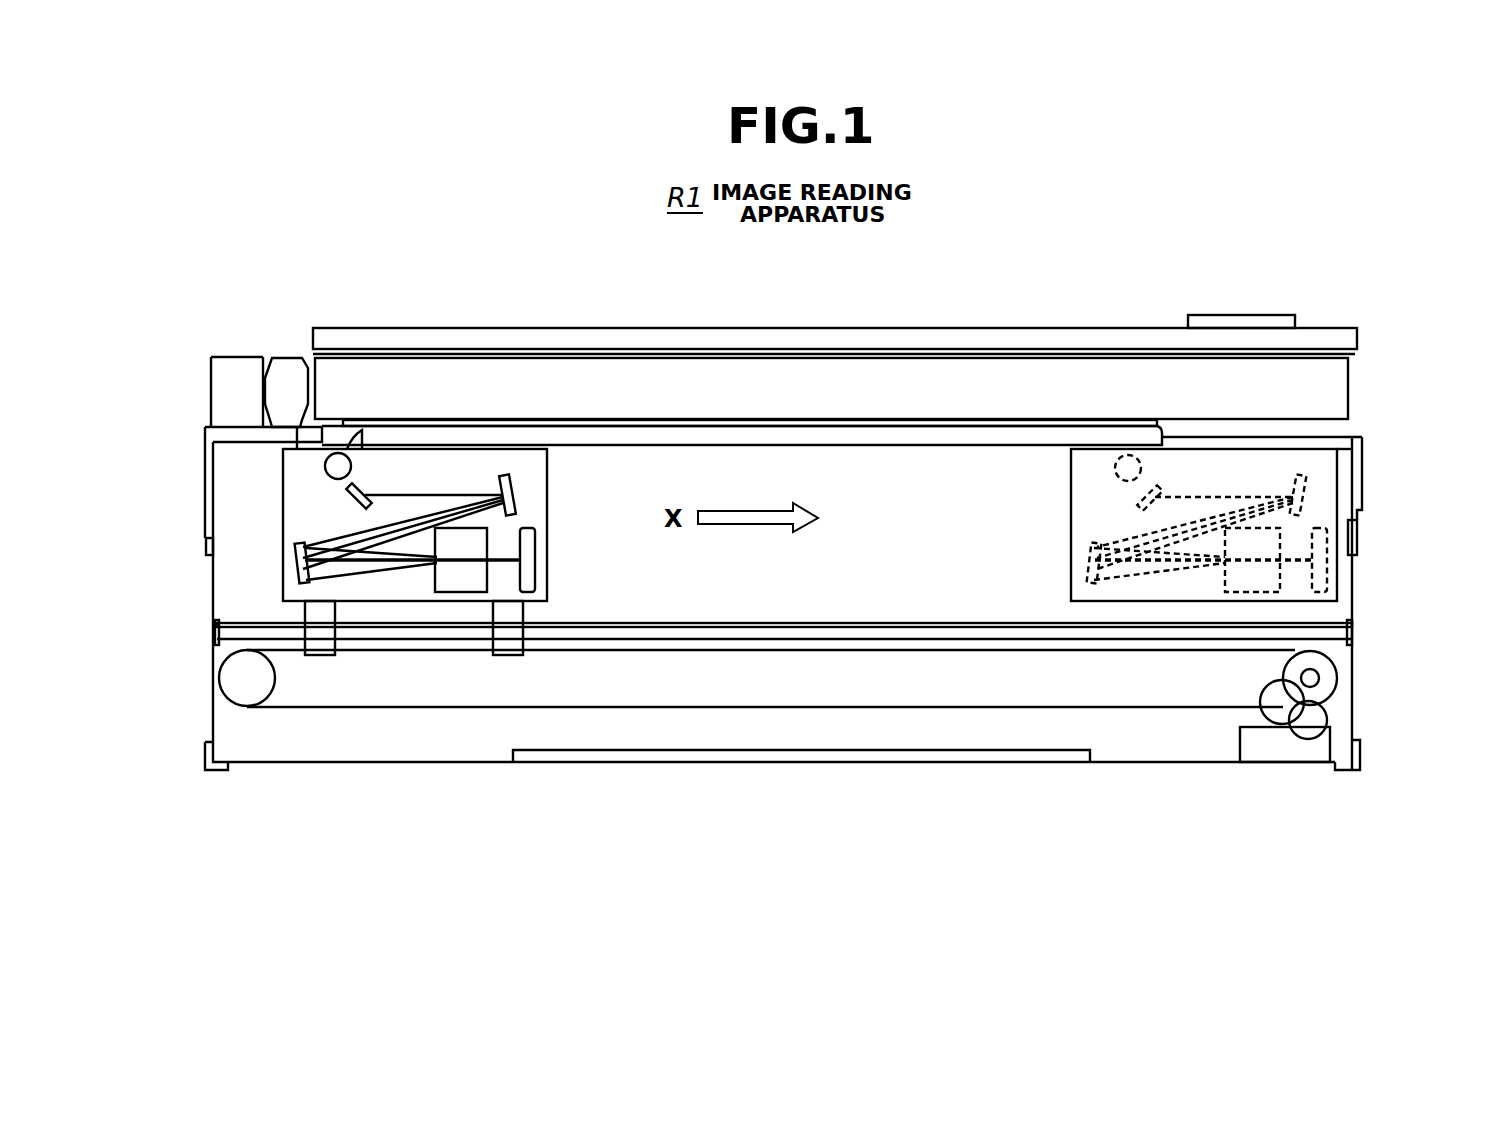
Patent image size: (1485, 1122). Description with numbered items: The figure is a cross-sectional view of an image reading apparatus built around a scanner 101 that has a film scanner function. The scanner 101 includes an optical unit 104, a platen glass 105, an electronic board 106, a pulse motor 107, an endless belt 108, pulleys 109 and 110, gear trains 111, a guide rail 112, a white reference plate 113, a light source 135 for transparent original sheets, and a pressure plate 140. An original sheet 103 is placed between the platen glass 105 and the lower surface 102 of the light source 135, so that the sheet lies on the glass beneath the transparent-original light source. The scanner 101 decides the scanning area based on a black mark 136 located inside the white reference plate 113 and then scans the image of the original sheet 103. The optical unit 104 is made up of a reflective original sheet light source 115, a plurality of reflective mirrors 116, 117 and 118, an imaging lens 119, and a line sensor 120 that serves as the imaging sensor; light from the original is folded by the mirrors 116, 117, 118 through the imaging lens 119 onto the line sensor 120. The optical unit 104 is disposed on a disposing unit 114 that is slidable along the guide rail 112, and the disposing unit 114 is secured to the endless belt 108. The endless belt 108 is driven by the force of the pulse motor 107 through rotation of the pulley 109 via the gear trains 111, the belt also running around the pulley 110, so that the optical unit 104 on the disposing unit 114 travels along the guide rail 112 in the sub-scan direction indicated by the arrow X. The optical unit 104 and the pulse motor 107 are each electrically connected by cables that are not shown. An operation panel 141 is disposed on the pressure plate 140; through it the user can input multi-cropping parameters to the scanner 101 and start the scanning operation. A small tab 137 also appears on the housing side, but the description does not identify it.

The scanner 101 is at (228, 764).
The lower surface 102 is at (850, 416).
The original sheet 103 is at (592, 421).
The optical unit 104 is at (390, 462).
The platen glass 105 is at (753, 434).
The electronic board 106 is at (843, 751).
The pulse motor 107 is at (1282, 751).
The endless belt 108 is at (377, 708).
The pulley 109 is at (1328, 692).
The pulley 110 is at (220, 677).
The gear trains 111 is at (1264, 709).
The guide rail 112 is at (917, 630).
The white reference plate 113 is at (295, 441).
The disposing unit 114 is at (320, 647).
The reflective original sheet light source 115 is at (325, 468).
The reflective mirror 116 is at (350, 500).
The reflective mirror 117 is at (503, 476).
The reflective mirror 118 is at (297, 560).
The imaging lens 119 is at (457, 580).
The line sensor 120 is at (533, 527).
The light source for transparent original sheet 135 is at (671, 377).
The black mark 136 is at (297, 424).
The positioning tab 137 is at (1357, 536).
The pressure plate 140 is at (935, 328).
The operation panel 141 is at (1240, 316).